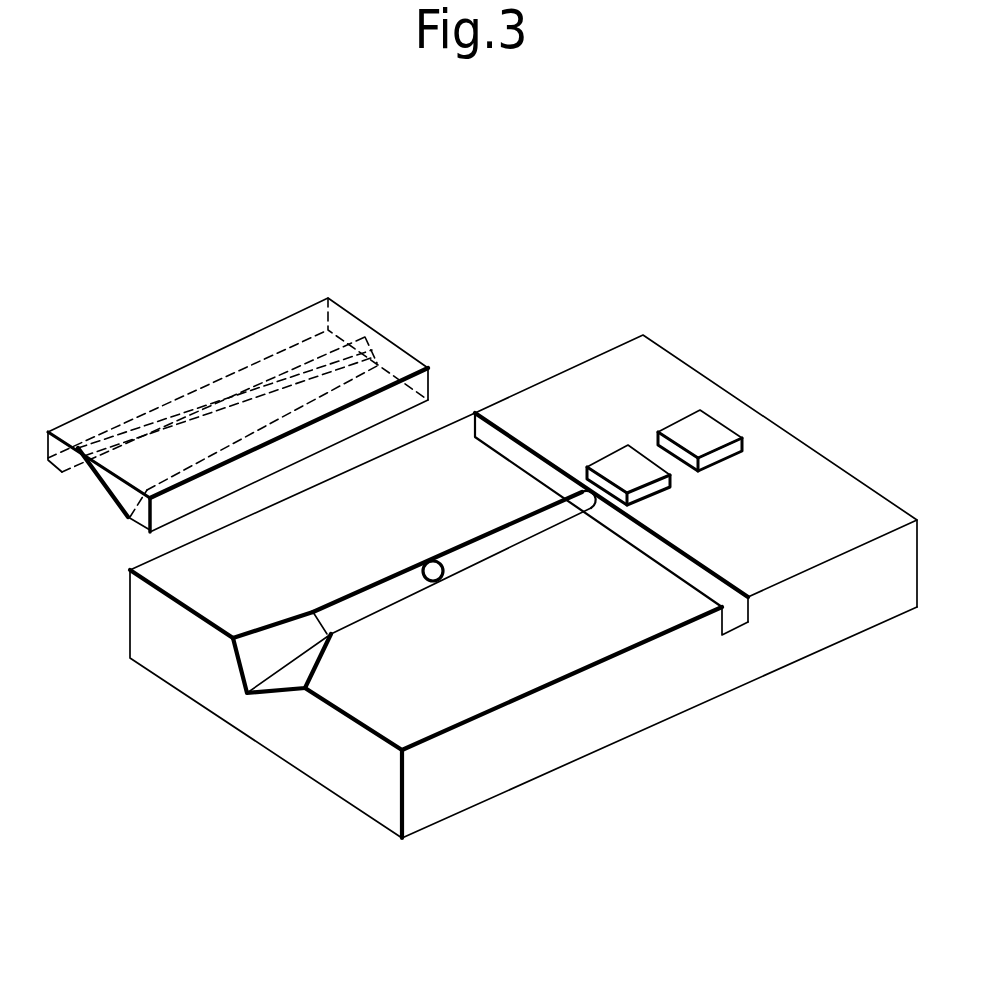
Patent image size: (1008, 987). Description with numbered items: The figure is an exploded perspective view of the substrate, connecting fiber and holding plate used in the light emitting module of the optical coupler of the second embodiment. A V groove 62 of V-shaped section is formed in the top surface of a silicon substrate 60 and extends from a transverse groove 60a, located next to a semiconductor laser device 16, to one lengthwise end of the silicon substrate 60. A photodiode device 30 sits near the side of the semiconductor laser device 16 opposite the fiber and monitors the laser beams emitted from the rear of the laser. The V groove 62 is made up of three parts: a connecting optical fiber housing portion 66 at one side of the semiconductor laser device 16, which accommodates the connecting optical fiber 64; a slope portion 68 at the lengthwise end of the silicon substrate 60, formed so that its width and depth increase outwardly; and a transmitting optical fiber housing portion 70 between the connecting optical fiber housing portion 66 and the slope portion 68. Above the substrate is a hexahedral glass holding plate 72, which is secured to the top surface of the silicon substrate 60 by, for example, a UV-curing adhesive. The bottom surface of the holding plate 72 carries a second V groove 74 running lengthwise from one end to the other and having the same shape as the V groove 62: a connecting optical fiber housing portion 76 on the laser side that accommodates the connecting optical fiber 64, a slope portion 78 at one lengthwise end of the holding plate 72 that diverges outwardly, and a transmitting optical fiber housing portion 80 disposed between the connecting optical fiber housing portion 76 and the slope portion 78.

The semiconductor laser device 16 is at (617, 464).
The photodiode device 30 is at (698, 435).
The silicon substrate 60 is at (798, 457).
The transverse groove 60a is at (731, 621).
The V groove 62 is at (680, 771).
The connecting optical fiber 64 is at (532, 530).
The connecting optical fiber housing portion 66 is at (490, 563).
The slope portion 68 is at (282, 652).
The transmitting optical fiber housing portion 70 is at (380, 602).
The holding plate 72 is at (388, 355).
The V groove 74 is at (243, 252).
The connecting optical fiber housing portion 76 is at (297, 367).
The slope portion 78 is at (90, 473).
The transmitting optical fiber housing portion 80 is at (230, 398).